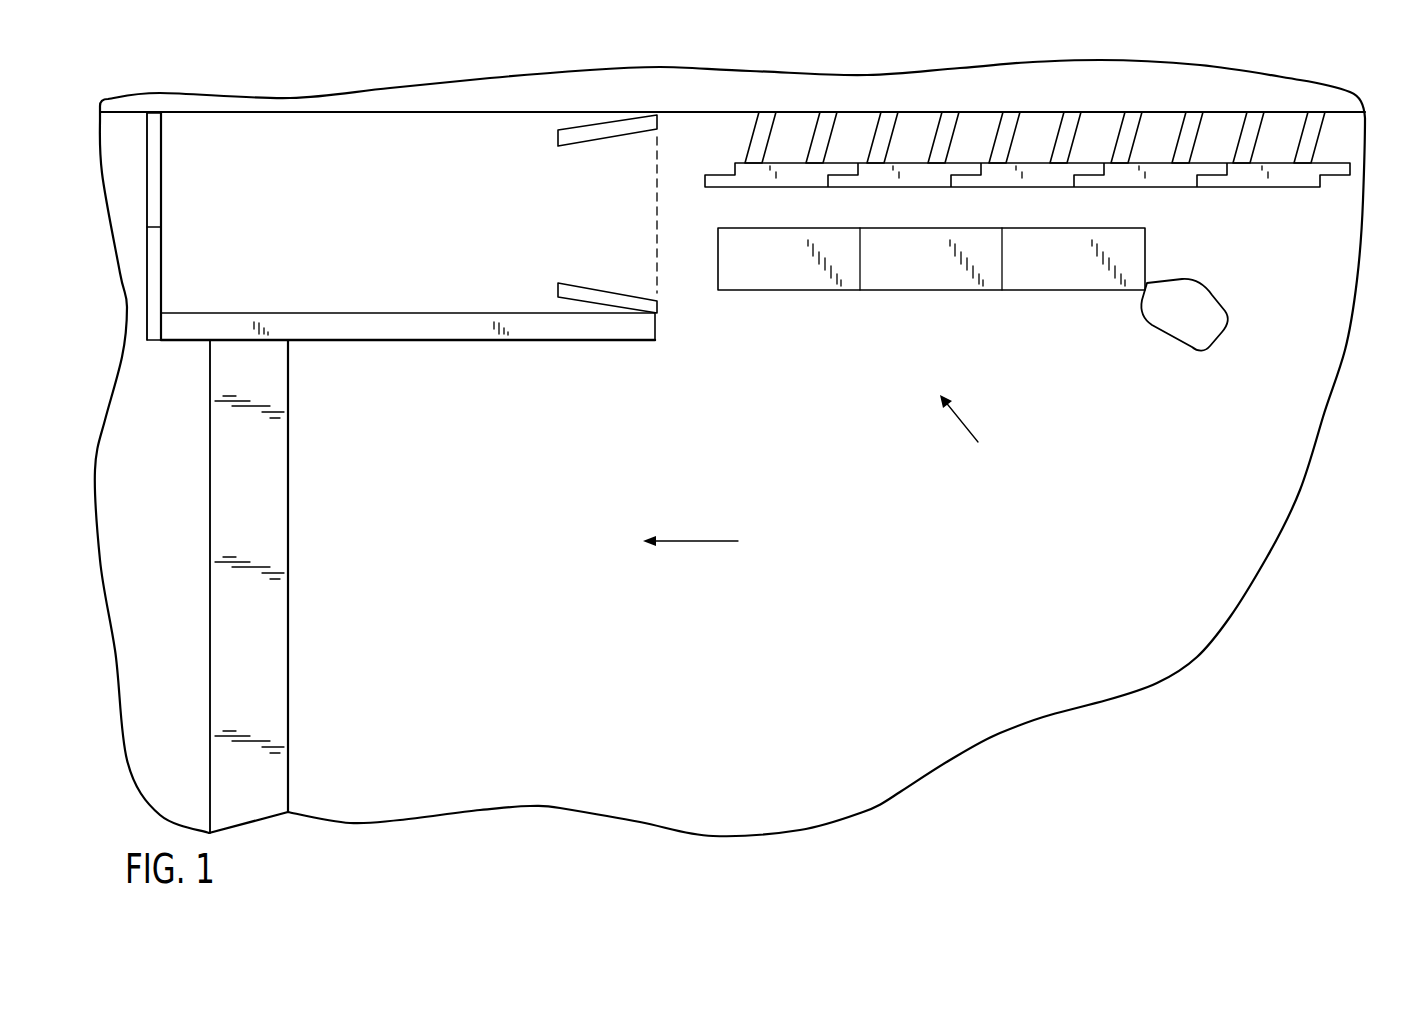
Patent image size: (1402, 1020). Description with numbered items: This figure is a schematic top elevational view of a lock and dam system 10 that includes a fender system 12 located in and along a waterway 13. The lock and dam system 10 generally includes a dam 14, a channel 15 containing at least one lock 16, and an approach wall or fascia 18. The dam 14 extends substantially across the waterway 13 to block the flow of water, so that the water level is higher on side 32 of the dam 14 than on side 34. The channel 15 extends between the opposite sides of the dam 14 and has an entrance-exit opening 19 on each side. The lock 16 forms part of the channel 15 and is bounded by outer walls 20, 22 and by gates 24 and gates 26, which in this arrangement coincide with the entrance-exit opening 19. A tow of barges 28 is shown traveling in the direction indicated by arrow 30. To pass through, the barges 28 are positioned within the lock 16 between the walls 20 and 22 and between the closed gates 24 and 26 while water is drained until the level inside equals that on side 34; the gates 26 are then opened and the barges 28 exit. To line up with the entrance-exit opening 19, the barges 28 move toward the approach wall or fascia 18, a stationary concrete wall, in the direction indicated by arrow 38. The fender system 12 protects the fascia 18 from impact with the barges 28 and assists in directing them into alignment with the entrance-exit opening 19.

The lock and dam system 10 is at (128, 86).
The fender system 12 is at (742, 128).
The waterway 13 is at (965, 617).
The dam 14 is at (273, 657).
The channel 15 is at (411, 134).
The lock 16 is at (461, 346).
The approach wall or fascia 18 is at (918, 112).
The entrance-exit opening 19 is at (658, 275).
The outer wall 20 is at (290, 113).
The outer wall 22 is at (352, 313).
The gates 24 is at (603, 140).
The gates 26 is at (162, 177).
The barges 28 is at (793, 272).
The arrow 30 is at (695, 541).
The side 32 is at (290, 488).
The side 34 is at (210, 480).
The arrow 38 is at (963, 422).